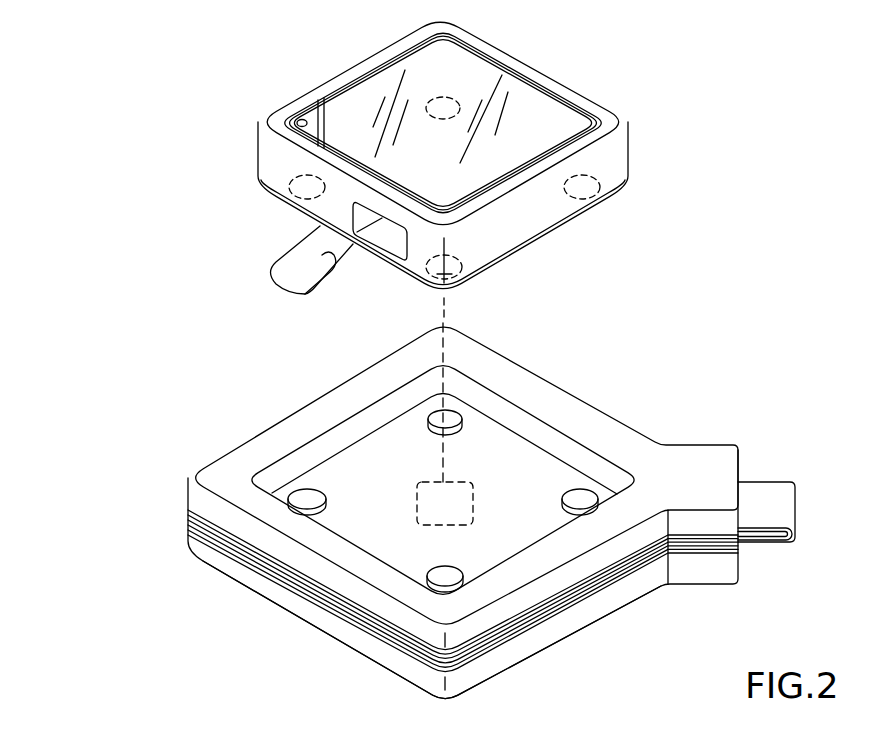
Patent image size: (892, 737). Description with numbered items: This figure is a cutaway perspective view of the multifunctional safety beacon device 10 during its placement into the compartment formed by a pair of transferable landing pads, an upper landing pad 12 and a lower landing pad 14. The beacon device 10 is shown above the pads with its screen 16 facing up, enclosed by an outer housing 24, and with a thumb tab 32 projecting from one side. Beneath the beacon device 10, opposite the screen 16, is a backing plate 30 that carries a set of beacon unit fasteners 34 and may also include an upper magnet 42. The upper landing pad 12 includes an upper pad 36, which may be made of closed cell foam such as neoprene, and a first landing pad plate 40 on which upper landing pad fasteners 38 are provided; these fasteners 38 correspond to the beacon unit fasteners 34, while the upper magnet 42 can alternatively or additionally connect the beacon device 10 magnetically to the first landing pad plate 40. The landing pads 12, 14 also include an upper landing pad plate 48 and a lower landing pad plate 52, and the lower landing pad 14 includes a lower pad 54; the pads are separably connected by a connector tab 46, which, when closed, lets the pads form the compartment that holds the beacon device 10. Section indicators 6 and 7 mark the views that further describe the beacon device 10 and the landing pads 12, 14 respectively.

The multifunctional safety beacon device 10 is at (279, 35).
The upper landing pad 12 is at (264, 370).
The lower landing pad 14 is at (256, 642).
The screen 16 is at (418, 60).
The outer housing 24 is at (600, 102).
The backing plate 30 is at (523, 253).
The thumb tab 32 is at (293, 272).
The beacon unit fasteners 34 is at (289, 188).
The upper pad 36 is at (613, 430).
The upper landing pad fasteners 38 is at (325, 502).
The upper landing pad plate (first landing pad plate) 40 is at (520, 484).
The upper magnet 42 is at (417, 484).
The connector tab 46 is at (752, 488).
The upper landing pad plate (third landing pad plate) 48 is at (368, 629).
The lower landing pad plate (fourth landing pad plate) 52 is at (410, 655).
The lower pad 54 is at (498, 667).
The FIG. 6 section reference 6 is at (582, 63).
The FIG. 7 section reference 7 is at (157, 513).